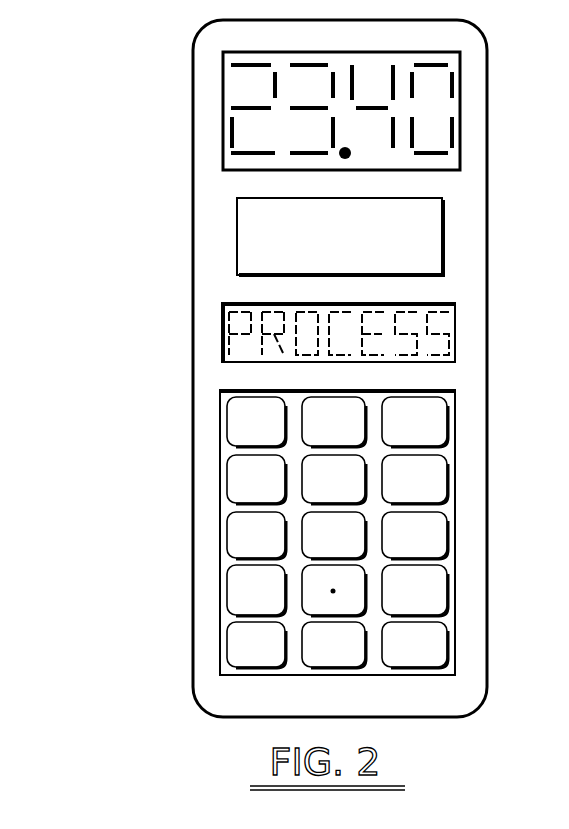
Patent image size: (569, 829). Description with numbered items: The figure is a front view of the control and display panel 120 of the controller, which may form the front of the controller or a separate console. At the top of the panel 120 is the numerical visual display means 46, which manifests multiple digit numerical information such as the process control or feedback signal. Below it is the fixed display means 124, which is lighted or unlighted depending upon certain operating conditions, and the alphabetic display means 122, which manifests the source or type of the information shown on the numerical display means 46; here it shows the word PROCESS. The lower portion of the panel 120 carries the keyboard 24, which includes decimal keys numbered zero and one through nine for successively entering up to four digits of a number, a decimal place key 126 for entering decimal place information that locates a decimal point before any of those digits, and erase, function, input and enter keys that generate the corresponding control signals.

The control and display panel 120 is at (193, 420).
The numerical visual display means 46 is at (226, 116).
The fixed display means 124 is at (234, 236).
The alphabetic display means 122 is at (223, 344).
The keyboard 24 is at (306, 550).
The decimal place key 126 is at (308, 600).